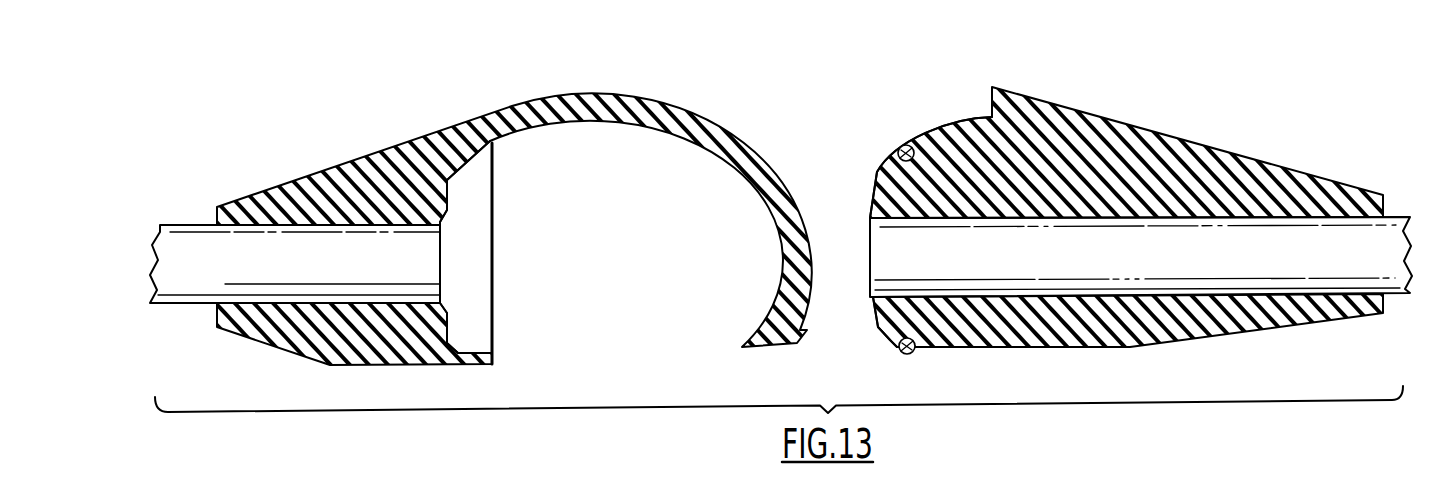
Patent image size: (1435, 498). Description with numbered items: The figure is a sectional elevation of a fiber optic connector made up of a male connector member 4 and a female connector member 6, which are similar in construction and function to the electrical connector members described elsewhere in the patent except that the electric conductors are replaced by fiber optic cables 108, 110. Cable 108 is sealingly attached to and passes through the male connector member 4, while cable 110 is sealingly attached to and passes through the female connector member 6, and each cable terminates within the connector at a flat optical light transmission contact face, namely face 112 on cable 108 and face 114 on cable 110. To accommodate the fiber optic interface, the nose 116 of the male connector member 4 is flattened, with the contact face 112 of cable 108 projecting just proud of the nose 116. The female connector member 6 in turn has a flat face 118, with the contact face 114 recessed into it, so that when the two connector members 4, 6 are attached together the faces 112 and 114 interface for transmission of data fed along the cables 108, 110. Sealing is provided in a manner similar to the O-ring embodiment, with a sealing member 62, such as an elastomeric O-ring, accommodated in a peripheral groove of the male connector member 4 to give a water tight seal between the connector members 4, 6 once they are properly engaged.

The male connector member 4 is at (1208, 128).
The female connector member 6 is at (367, 142).
The sealing member 62 is at (908, 354).
The fiber optic cable 108 is at (1052, 280).
The fiber optic cable 110 is at (228, 287).
The optical light transmission contact face 112 is at (870, 293).
The optical light transmission contact face 114 is at (440, 264).
The nose 116 is at (878, 196).
The flat face 118 is at (447, 199).